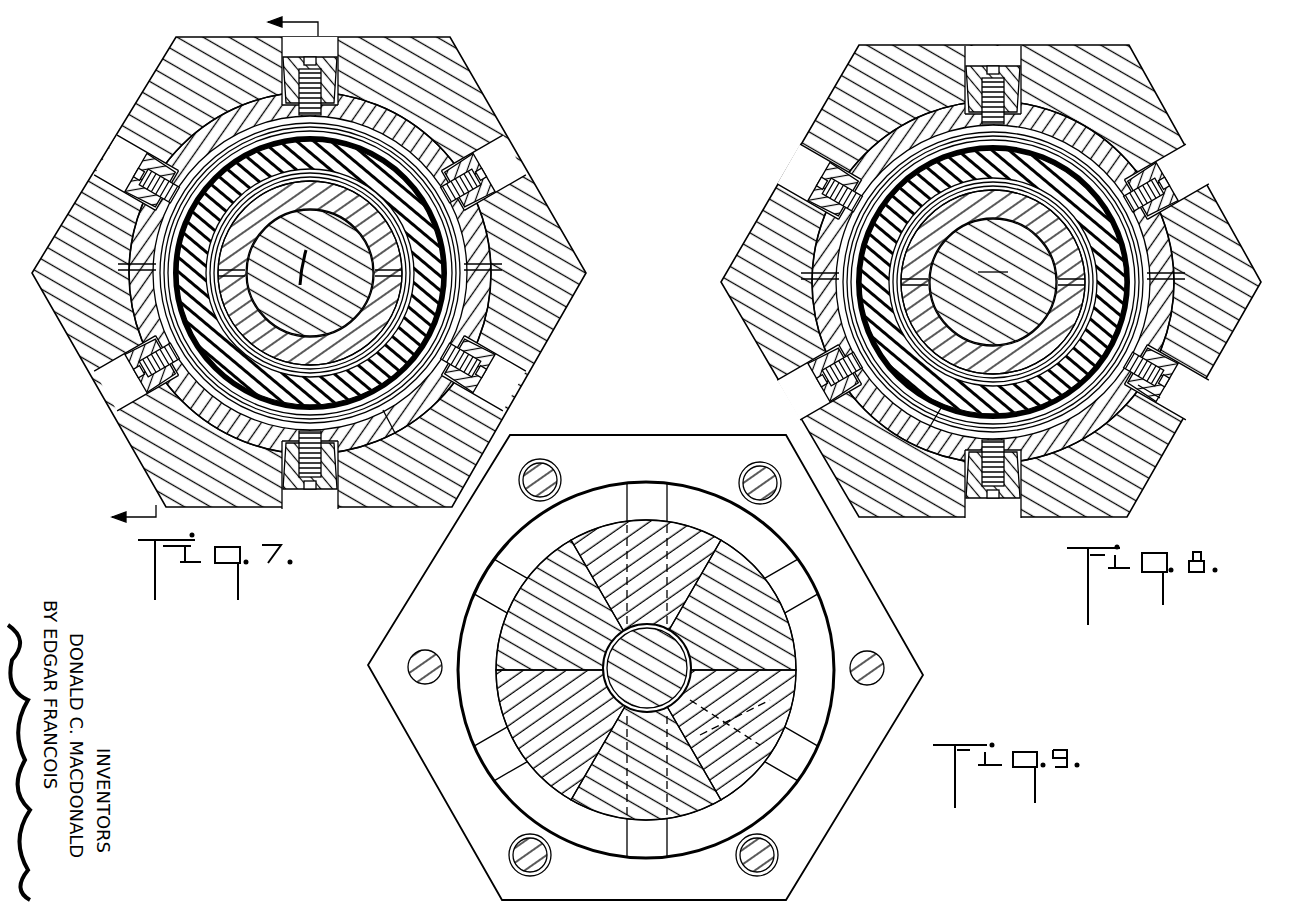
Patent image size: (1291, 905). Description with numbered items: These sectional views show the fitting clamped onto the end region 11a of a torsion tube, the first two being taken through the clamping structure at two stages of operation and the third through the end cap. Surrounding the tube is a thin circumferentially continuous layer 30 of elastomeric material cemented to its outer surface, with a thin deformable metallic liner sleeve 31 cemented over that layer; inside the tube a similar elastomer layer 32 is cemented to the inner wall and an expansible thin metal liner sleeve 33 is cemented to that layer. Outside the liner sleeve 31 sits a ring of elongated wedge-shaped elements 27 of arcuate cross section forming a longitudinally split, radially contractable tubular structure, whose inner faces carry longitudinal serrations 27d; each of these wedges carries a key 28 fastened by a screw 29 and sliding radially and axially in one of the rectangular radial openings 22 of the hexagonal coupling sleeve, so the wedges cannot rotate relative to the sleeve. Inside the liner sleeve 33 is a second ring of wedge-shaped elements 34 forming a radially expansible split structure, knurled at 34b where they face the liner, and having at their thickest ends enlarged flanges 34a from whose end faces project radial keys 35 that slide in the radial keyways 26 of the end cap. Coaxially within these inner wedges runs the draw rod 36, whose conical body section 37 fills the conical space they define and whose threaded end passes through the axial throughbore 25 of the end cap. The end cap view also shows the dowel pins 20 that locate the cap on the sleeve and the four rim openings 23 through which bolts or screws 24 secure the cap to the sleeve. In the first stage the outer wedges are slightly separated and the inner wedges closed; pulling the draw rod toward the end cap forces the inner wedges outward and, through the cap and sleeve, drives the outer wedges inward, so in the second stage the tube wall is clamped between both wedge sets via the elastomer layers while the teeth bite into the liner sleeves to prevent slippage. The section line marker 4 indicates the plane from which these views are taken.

In FIG. 7, the section line 4 is at (204, 273).
In FIG. 7, the end region of the torsion tube 11a is at (168, 242).
In FIG. 9, the dowel pins 20 is at (410, 673).
In FIG. 7, the radial openings 22 is at (497, 147).
In FIG. 8, the radial openings 22 is at (784, 178).
In FIG. 9, the openings 23 is at (780, 860).
In FIG. 9, the bolts or screws 24 is at (560, 468).
In FIG. 9, the axial opening or throughbore 25 is at (693, 702).
In FIG. 9, the radial keyways 26 is at (668, 499).
In FIG. 7, the wedge-shaped elements 27 is at (233, 143).
In FIG. 8, the wedge-shaped elements 27 is at (820, 324).
In FIG. 7, the serrations or teeth 27d is at (446, 398).
In FIG. 8, the serrations or teeth 27d is at (1140, 260).
In FIG. 7, the key 28 is at (343, 78).
In FIG. 7, the screw 29 is at (290, 498).
In FIG. 7, the layer of elastomeric material 30 is at (366, 410).
In FIG. 7, the liner sleeve 31 is at (447, 289).
In FIG. 7, the layer of elastomeric material 32 is at (397, 243).
In FIG. 7, the liner sleeve 33 is at (200, 265).
In FIG. 7, the wedge-shaped elements 34 is at (337, 341).
In FIG. 8, the wedge-shaped elements 34 is at (1030, 242).
In FIG. 9, the transverse shoulders or flanges 34a is at (507, 643).
In FIG. 7, the knurling or teeth 34b is at (265, 406).
In FIG. 8, the knurling or teeth 34b is at (933, 302).
In FIG. 9, the radial keys 35 is at (724, 598).
In FIG. 9, the draw rod 36 is at (647, 668).
In FIG. 7, the conical body section 37 is at (333, 220).
In FIG. 8, the conical body section 37 is at (993, 261).